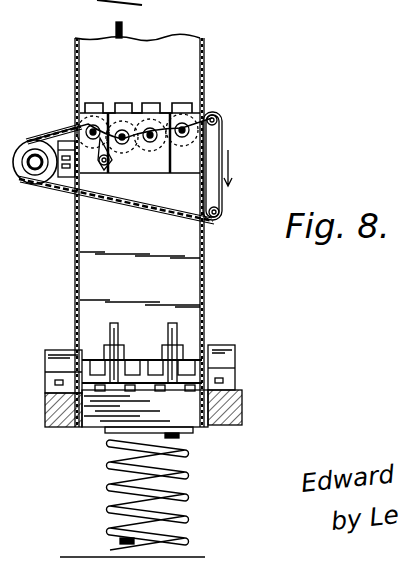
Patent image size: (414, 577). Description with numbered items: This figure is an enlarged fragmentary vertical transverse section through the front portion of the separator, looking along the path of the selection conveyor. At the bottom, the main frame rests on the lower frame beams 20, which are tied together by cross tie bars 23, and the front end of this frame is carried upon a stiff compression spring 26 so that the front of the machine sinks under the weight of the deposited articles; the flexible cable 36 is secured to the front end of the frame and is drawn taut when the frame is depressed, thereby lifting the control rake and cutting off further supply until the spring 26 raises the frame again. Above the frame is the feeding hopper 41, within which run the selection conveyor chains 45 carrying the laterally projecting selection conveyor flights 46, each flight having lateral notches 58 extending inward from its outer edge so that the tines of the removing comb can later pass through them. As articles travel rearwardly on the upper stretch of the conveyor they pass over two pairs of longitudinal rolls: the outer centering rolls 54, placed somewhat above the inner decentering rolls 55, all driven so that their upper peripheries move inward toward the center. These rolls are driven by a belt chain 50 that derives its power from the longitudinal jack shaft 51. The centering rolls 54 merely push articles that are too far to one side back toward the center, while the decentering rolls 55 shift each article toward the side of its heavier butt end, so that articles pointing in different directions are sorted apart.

The lower frame beams 20 is at (45, 400).
The cross tie bars 23 is at (145, 408).
The compression spring 26 is at (106, 452).
The flexible cable 36 is at (124, 30).
The feeding hopper 41 is at (140, 116).
The selection conveyor chains 45 is at (104, 120).
The selection conveyor flights 46 is at (112, 105).
The belt chain 50 is at (224, 134).
The jack shaft 51 is at (30, 180).
The centering rolls 54 is at (160, 170).
The decentering rolls 55 is at (137, 164).
The lateral notches 58 is at (138, 108).